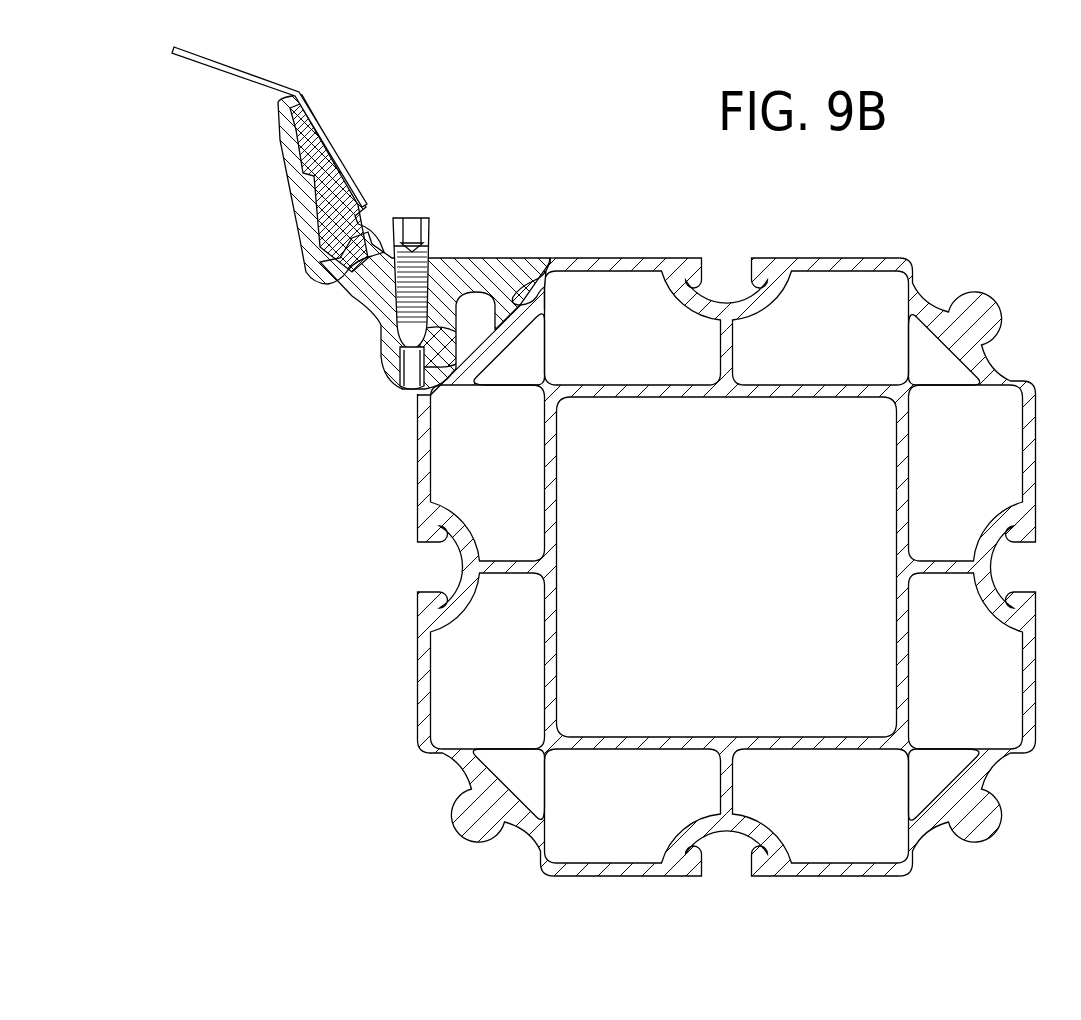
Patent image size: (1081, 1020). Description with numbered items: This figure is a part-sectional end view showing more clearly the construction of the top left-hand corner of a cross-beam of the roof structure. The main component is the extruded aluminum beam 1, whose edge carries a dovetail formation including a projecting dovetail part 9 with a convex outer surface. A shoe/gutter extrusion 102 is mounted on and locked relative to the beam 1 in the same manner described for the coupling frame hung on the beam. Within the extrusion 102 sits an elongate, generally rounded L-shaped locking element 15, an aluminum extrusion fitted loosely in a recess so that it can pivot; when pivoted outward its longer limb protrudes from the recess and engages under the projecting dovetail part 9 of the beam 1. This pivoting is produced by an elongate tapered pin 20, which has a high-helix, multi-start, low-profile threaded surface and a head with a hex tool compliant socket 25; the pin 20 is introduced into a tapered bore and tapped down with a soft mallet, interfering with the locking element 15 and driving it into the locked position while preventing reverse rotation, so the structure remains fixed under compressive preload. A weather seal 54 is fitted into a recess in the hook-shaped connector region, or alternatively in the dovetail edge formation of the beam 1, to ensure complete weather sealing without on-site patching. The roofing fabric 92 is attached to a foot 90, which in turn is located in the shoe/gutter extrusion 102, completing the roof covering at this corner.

The beam 1 is at (711, 541).
The projecting dovetail part 9 is at (477, 317).
The locking element 15 is at (400, 353).
The tapered pin 20 is at (451, 246).
The hex tool compliant socket 25 is at (409, 217).
The weather seal 54 is at (527, 282).
The foot 90 is at (327, 207).
The roofing fabric 92 is at (270, 81).
The shoe/gutter extrusion 102 is at (375, 287).